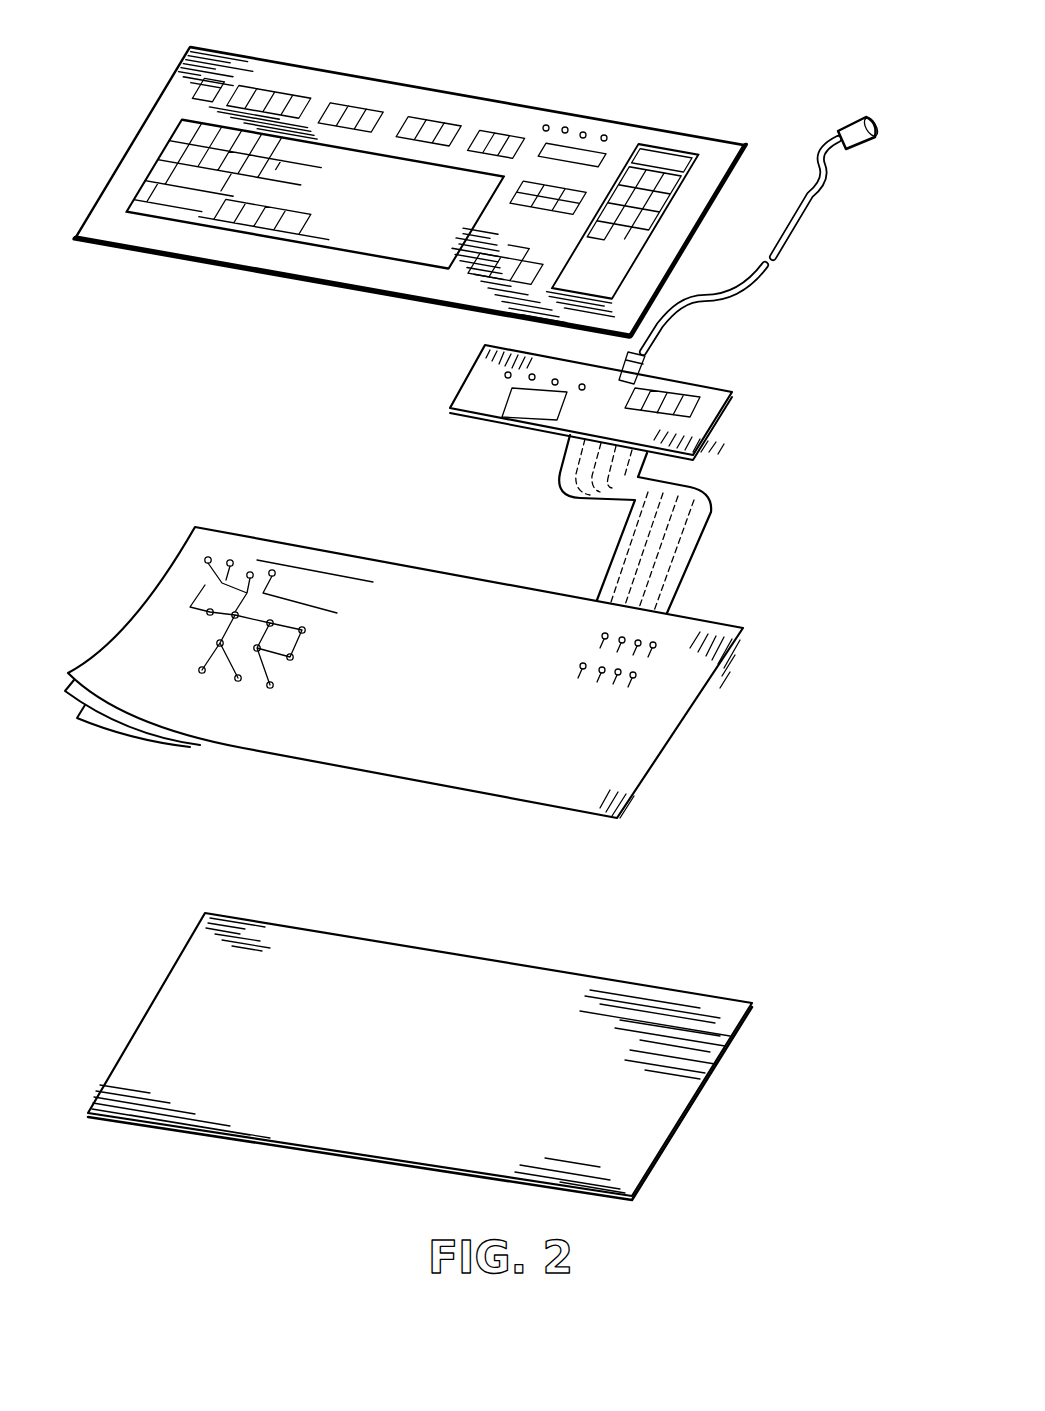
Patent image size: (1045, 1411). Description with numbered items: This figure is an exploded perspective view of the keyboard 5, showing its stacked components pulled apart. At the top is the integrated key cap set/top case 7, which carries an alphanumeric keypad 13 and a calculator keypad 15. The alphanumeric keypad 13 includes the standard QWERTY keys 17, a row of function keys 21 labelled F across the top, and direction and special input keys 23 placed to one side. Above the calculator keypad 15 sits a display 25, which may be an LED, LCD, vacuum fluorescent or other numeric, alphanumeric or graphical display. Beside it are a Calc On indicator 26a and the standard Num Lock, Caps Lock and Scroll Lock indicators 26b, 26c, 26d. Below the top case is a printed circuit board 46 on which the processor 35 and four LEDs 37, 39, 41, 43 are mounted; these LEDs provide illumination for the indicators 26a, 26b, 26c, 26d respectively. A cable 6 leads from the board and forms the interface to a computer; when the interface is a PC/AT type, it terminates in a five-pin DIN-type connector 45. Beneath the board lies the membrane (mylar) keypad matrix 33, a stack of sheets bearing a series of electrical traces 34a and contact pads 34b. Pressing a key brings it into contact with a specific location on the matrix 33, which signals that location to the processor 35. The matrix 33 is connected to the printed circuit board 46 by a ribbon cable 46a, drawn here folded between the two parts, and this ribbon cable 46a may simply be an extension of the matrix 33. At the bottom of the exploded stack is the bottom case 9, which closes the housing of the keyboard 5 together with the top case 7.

The keyboard 5 is at (858, 365).
The cable 6 is at (780, 204).
The key cap set/top case 7 is at (505, 103).
The bottom case 9 is at (617, 980).
The alphanumeric keypad 13 is at (170, 108).
The calculator keypad 15 is at (667, 223).
The QWERTY keys 17 is at (163, 150).
The function keys 21 is at (347, 105).
The direction and special input keys 23 is at (450, 267).
The display 25 is at (667, 370).
The Calc On indicator 26a is at (546, 124).
The Num Lock indicator 26b is at (567, 126).
The Caps Lock indicator 26c is at (586, 132).
The Scroll Lock indicator 26d is at (607, 136).
The membrane keypad matrix 33 is at (445, 642).
The electrical traces 34a is at (210, 648).
The contact pads 34b is at (230, 560).
The processor 35 is at (518, 420).
The LED 37 is at (505, 372).
The LED 39 is at (528, 378).
The LED 41 is at (514, 401).
The LED 43 is at (582, 390).
The 5-pin DIN-type connector 45 is at (843, 120).
The printed circuit board 46 is at (613, 419).
The ribbon cable 46a is at (695, 545).
The function key F is at (376, 87).